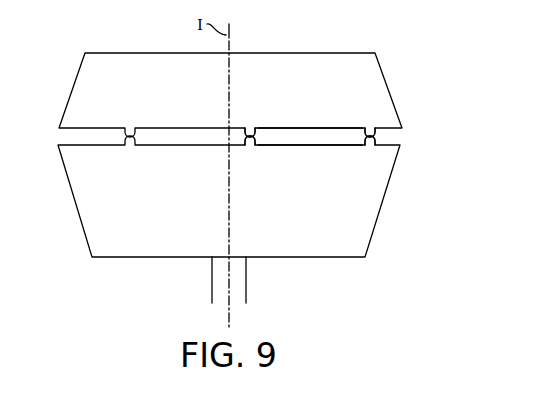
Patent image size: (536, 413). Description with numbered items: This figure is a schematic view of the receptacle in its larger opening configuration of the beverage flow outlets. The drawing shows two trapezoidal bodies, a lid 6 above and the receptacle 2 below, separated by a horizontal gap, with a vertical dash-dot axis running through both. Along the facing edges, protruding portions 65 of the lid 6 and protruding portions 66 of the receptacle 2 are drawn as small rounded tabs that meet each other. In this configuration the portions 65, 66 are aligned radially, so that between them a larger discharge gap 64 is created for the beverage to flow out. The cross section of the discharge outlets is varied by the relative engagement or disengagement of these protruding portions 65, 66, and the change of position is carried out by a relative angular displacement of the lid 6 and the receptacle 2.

The upper half (cover) 6 is at (385, 74).
The lower half (base body) 2 is at (384, 206).
The larger discharge gap 64 is at (308, 140).
The protruding portions of the lid 65 is at (252, 127).
The protruding portions of the receptacle 66 is at (372, 149).